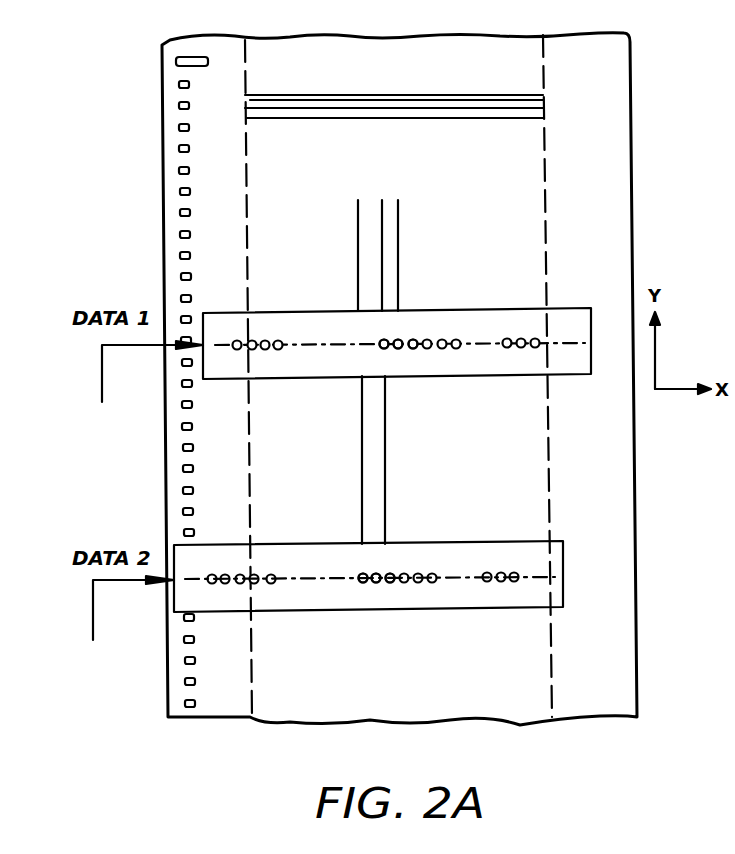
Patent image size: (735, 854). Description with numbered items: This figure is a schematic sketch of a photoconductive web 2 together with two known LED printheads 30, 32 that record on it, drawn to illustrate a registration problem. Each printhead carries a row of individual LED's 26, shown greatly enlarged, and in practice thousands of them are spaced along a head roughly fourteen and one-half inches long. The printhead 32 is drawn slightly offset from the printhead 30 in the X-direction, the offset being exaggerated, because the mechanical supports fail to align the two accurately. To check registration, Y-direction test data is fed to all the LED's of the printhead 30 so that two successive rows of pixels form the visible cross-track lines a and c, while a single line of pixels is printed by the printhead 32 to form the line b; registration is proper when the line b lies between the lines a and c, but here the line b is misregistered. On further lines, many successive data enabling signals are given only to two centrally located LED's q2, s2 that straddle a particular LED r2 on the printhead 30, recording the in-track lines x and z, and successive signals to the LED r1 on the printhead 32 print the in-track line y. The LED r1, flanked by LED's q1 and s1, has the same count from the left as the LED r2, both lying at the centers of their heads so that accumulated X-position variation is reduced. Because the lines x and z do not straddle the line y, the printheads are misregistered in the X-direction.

The photoconductive web 2 is at (607, 70).
The LED's 26 is at (278, 340).
The printhead 30 is at (555, 546).
The printhead 32 is at (573, 308).
The cross-track line a is at (425, 100).
The cross-track line b is at (345, 95).
The cross-track line c is at (488, 118).
The in-track line x is at (362, 423).
The in-track line y is at (398, 222).
The in-track line z is at (385, 458).
The LED q1 is at (380, 338).
The LED r1 is at (400, 338).
The LED s1 is at (414, 338).
The LED q2 is at (363, 573).
The LED r2 is at (376, 573).
The LED s2 is at (390, 573).